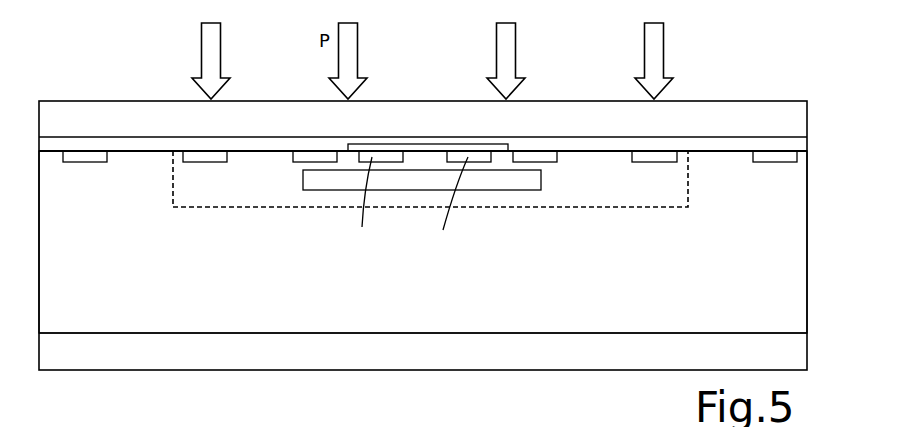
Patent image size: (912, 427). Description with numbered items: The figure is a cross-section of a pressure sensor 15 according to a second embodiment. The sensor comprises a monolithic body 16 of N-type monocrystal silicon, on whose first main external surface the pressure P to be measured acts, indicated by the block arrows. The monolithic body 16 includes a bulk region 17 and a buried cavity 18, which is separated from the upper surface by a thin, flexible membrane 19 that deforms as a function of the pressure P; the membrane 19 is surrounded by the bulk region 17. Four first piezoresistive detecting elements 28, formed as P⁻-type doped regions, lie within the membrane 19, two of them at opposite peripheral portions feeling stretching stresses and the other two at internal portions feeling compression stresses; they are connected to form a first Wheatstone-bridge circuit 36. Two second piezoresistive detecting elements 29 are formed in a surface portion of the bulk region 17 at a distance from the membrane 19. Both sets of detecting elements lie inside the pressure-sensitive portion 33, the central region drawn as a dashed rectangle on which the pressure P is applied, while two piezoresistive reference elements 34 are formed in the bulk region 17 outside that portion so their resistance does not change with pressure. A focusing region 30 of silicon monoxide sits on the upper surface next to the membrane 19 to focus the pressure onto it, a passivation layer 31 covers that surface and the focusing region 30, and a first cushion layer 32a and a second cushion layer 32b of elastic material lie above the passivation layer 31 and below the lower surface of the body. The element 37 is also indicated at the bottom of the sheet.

The pressure sensor 15 is at (108, 94).
The monolithic body 16 is at (773, 263).
The bulk region 17 is at (204, 309).
The cavity 18 is at (526, 183).
The membrane 19 is at (430, 158).
The first piezoresistive detecting elements 28 is at (365, 157).
The second piezoresistive detecting elements 29 is at (188, 157).
The focusing region 30 is at (425, 144).
The passivation layer 31 is at (817, 139).
The first cushion layer 32a is at (792, 113).
The second cushion layer 32b is at (790, 357).
The pressure-sensitive portion 33 is at (678, 207).
The piezoresistive reference elements 34 is at (97, 157).
The first Wheatstone-bridge circuit 36 is at (591, 422).
The reference element 37 is at (241, 426).